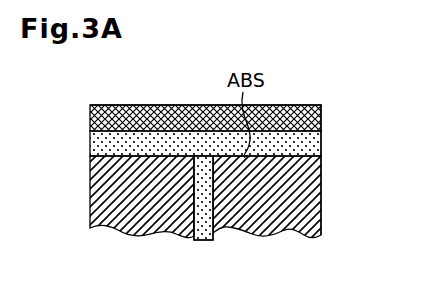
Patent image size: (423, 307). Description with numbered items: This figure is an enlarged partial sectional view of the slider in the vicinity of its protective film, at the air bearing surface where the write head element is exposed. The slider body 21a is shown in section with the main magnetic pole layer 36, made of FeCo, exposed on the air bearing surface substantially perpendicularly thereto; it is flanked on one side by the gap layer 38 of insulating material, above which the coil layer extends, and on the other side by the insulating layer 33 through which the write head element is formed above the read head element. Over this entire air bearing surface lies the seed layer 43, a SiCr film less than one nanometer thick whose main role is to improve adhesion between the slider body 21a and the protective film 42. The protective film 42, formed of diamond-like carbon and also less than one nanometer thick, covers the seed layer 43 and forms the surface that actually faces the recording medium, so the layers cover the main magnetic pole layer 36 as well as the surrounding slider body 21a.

The slider body 21a is at (338, 182).
The protective film 42 is at (88, 127).
The seed layer 43 is at (88, 150).
The gap layer 38 is at (133, 232).
The main magnetic pole layer 36 is at (198, 243).
The insulating layer 33 is at (252, 232).